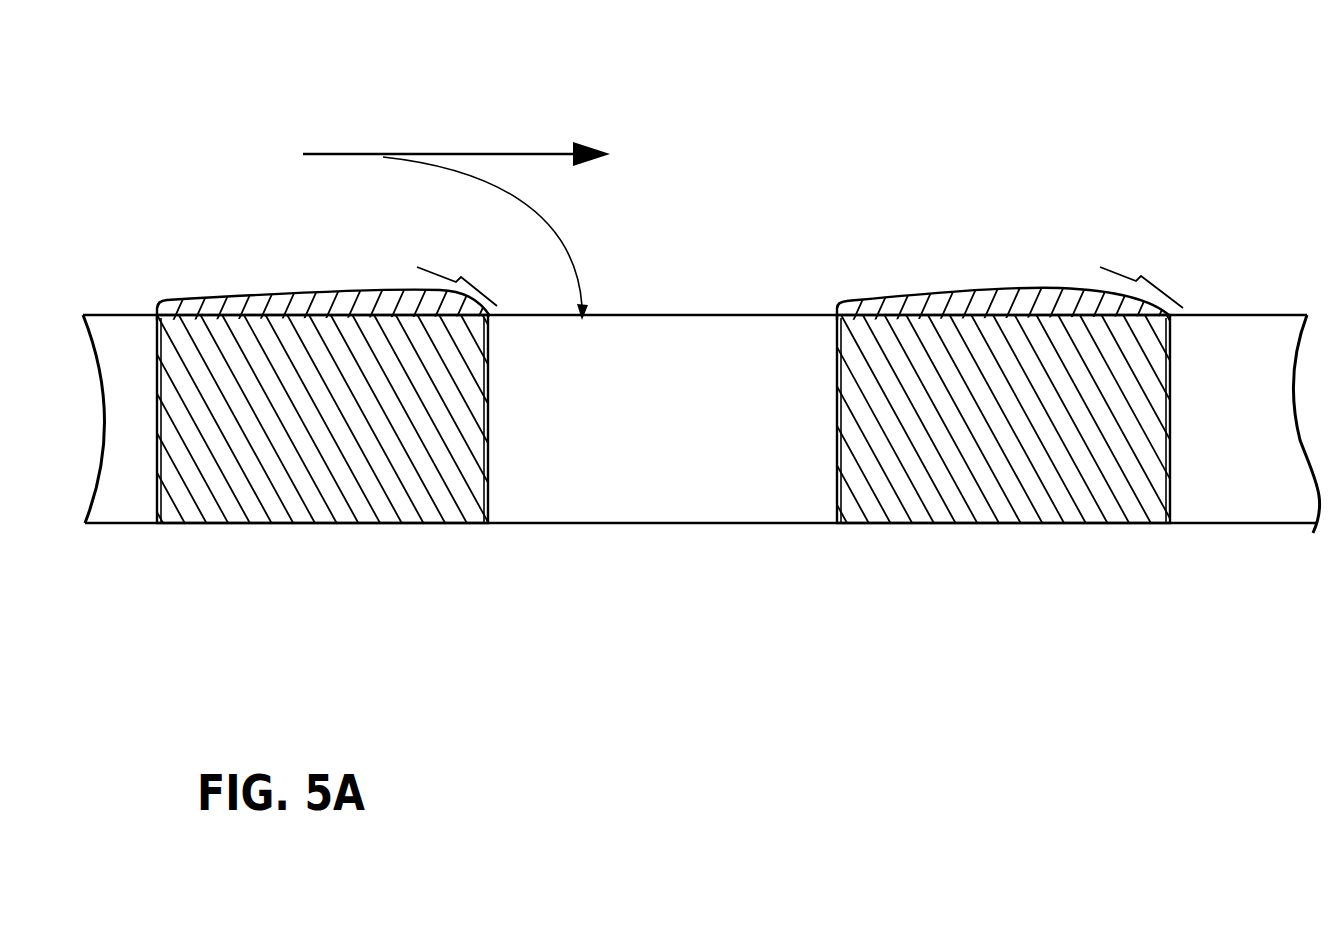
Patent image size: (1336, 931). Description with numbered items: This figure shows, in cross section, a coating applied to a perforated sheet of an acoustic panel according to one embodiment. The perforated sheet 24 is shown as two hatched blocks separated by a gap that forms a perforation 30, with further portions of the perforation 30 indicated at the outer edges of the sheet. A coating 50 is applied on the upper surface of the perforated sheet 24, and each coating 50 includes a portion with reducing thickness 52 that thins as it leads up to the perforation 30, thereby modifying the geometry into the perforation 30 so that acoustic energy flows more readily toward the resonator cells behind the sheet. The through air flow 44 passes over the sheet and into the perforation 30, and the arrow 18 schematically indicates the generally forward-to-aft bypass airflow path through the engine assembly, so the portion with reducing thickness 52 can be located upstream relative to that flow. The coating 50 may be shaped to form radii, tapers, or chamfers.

The bypass airflow path arrow 18 is at (441, 153).
The perforated sheet 24 is at (307, 478).
The perforation 30 is at (123, 450).
The through air flow 44 is at (563, 243).
The coating 50 is at (255, 288).
The portion with reducing thickness 52 is at (800, 276).